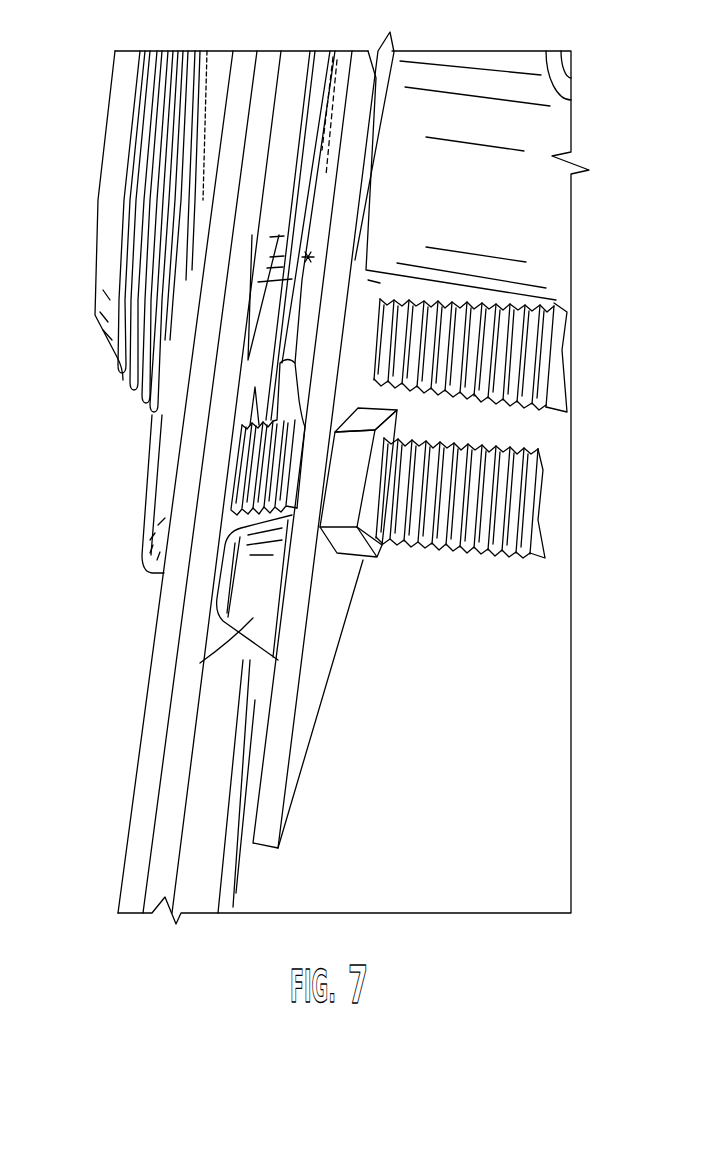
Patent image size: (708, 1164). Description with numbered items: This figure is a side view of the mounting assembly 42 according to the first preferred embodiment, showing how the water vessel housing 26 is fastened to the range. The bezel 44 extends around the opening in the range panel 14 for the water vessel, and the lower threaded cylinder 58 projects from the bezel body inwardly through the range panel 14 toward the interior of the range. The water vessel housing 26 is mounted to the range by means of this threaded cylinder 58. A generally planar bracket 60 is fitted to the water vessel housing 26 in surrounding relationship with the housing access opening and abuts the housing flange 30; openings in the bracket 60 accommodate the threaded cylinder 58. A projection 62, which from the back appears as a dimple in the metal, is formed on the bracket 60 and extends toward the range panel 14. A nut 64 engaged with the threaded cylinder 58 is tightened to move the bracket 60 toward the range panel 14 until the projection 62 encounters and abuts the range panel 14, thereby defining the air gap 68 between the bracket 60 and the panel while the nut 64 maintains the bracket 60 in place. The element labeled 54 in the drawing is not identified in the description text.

The range panel 14 is at (165, 822).
The water vessel housing 26 is at (544, 213).
The housing flange 30 is at (307, 393).
The mounting assembly 42 is at (470, 650).
The bezel 44 is at (157, 532).
The ribbed coupling 54 is at (282, 173).
The lower threaded cylinder 58 is at (492, 547).
The bracket 60 is at (325, 645).
The projection 62 is at (253, 620).
The nut 64 is at (383, 547).
The air gap 68 is at (312, 256).